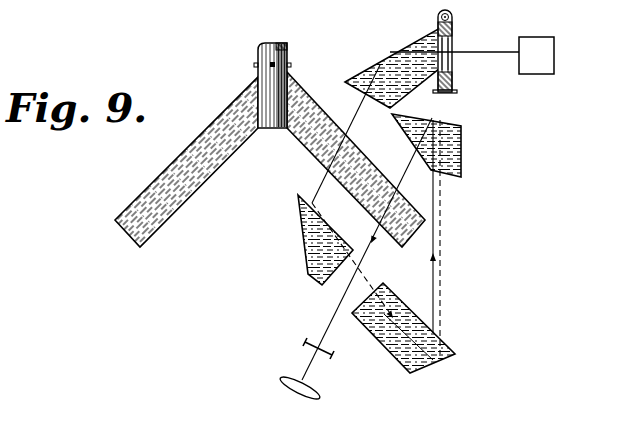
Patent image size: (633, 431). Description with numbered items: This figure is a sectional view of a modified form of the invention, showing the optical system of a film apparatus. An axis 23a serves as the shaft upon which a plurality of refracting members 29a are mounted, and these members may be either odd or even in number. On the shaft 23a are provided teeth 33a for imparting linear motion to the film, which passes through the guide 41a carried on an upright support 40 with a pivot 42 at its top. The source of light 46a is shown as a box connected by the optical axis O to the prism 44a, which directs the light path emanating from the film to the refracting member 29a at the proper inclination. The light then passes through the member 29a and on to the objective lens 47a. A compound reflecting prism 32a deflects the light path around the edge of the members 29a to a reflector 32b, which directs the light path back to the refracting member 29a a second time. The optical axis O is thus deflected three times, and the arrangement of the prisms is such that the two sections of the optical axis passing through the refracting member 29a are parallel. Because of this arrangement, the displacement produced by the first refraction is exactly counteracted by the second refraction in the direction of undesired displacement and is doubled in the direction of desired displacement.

The axis 23a is at (270, 88).
The teeth 33a is at (275, 63).
The refracting member 29a is at (218, 152).
The prism 44a is at (368, 77).
The photo-cell tube 40 is at (437, 27).
The pivot 42 is at (452, 22).
The guide 41a is at (442, 66).
The source of light 46a is at (543, 50).
The reflector 32b is at (452, 147).
The compound reflecting prism 32a is at (316, 261).
The objective lens 47a is at (293, 380).
The optical axis O is at (371, 237).